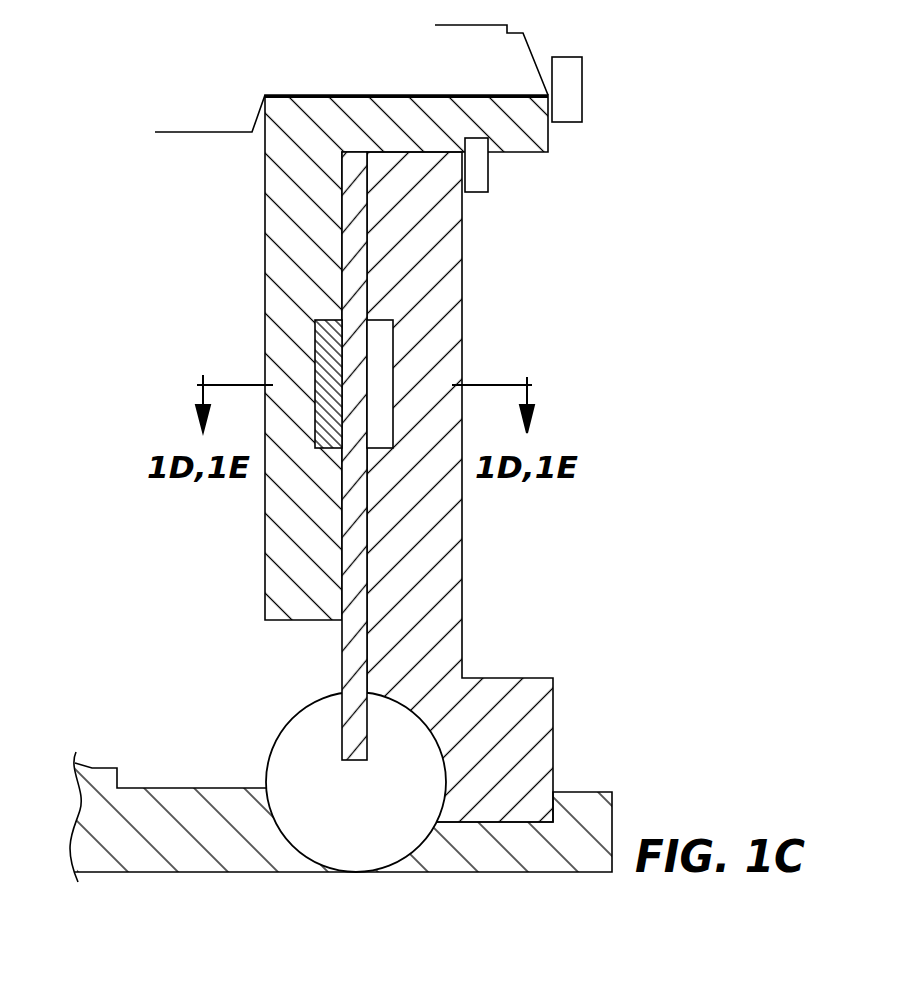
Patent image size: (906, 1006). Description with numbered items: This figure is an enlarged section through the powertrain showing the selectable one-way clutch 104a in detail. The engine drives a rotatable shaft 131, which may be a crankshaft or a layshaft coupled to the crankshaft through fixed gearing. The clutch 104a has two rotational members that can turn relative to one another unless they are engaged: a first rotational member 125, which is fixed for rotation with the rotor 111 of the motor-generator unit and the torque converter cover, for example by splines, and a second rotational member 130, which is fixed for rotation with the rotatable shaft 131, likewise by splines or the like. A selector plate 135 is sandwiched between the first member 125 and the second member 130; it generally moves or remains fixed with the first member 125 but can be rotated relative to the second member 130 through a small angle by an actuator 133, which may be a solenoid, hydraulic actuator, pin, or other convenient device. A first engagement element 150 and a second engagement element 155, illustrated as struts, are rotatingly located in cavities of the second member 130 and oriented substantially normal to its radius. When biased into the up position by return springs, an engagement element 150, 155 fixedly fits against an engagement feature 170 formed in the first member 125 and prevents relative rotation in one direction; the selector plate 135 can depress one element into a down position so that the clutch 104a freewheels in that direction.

The rotor 111 is at (498, 63).
The selectable one-way clutch 104a is at (403, 503).
The first rotational member 125 is at (280, 581).
The second rotational member 130 is at (433, 618).
The selector plate 135 is at (350, 223).
The engagement feature 170 is at (383, 360).
The first engagement element 150 is at (440, 427).
The second engagement element 155 is at (333, 438).
The rotatable shaft 131 is at (226, 855).
The actuator 133 is at (408, 838).